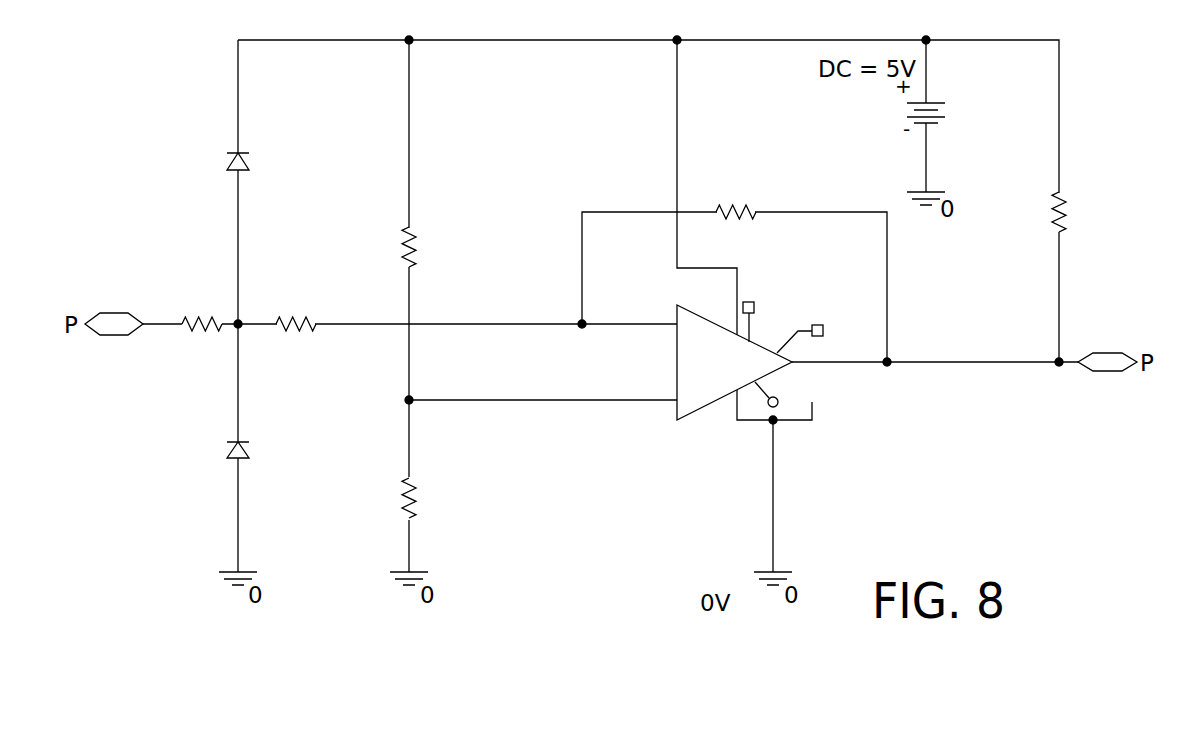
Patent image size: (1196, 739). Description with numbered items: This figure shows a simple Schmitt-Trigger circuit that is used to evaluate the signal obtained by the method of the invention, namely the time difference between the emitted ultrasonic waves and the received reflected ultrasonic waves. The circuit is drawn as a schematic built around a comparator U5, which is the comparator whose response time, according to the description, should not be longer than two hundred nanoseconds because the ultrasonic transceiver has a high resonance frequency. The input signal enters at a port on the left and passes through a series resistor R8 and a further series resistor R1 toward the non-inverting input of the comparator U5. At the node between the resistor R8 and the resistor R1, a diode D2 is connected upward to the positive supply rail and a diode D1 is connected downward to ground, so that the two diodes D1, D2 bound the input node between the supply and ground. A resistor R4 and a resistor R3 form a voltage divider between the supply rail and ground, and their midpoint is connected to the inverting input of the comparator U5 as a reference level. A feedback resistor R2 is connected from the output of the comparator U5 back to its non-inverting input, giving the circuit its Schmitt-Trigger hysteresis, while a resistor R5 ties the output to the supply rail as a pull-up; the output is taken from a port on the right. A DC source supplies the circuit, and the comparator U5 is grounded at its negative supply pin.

The resistor R8 (4.7k) R8 is at (201, 327).
The resistor R1 (4.7k) R1 is at (295, 327).
The resistor R4 (100k) R4 is at (445, 250).
The resistor R3 (820) R3 is at (439, 500).
The feedback resistor R2 (640k) R2 is at (737, 213).
The pull-up resistor R5 (4.7k) R5 is at (1090, 215).
The diode D1 (BAS20) D1 is at (282, 460).
The diode D2 (BAS20) D2 is at (282, 169).
The comparator U5 (LM311) U5 is at (714, 365).